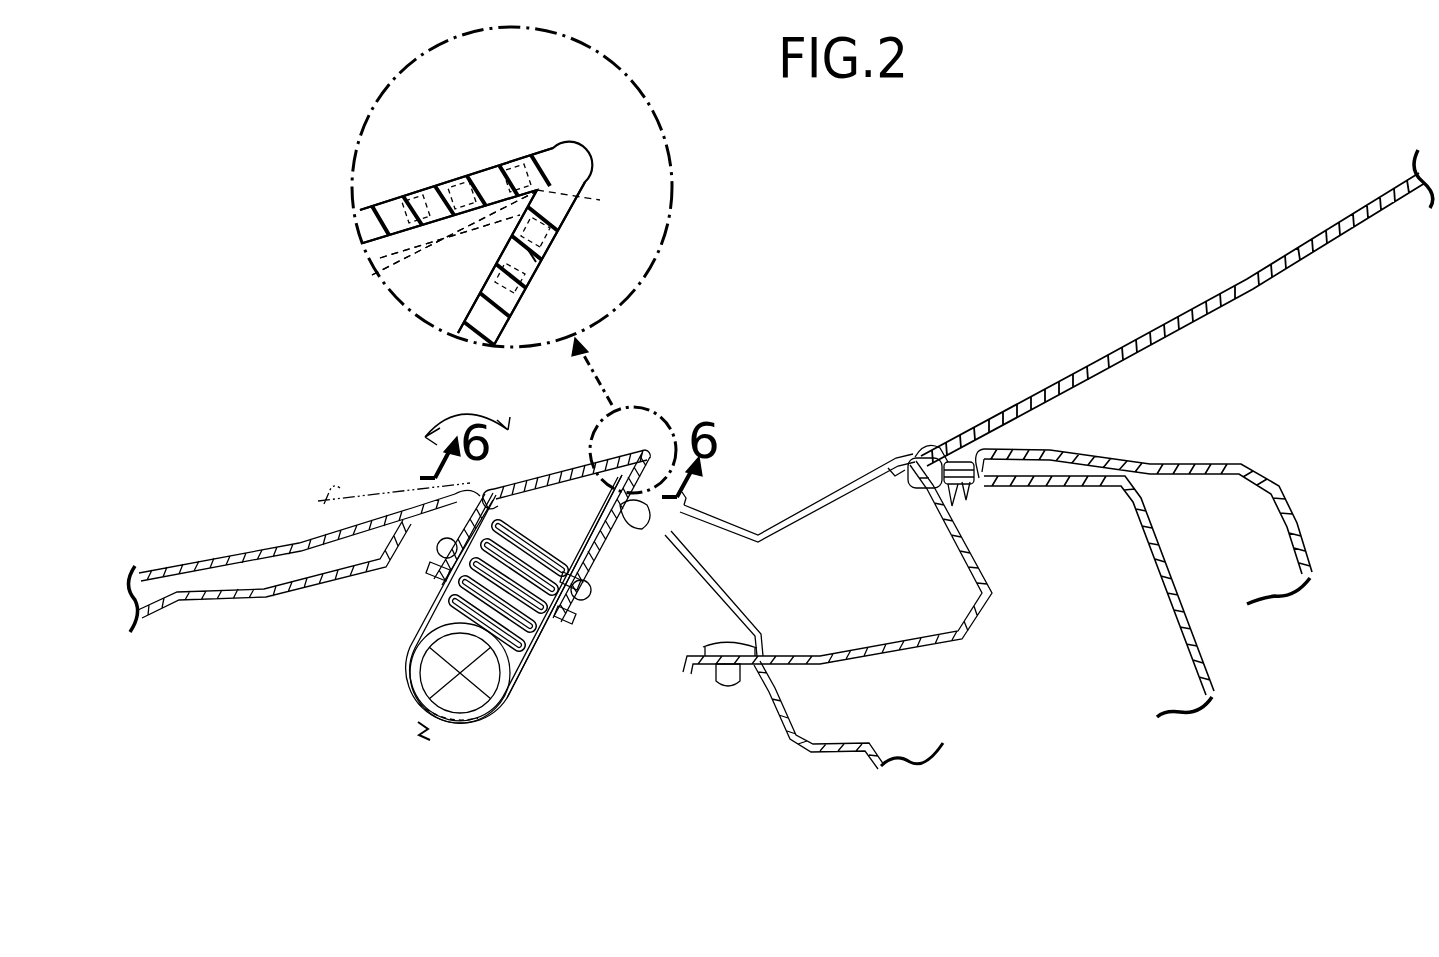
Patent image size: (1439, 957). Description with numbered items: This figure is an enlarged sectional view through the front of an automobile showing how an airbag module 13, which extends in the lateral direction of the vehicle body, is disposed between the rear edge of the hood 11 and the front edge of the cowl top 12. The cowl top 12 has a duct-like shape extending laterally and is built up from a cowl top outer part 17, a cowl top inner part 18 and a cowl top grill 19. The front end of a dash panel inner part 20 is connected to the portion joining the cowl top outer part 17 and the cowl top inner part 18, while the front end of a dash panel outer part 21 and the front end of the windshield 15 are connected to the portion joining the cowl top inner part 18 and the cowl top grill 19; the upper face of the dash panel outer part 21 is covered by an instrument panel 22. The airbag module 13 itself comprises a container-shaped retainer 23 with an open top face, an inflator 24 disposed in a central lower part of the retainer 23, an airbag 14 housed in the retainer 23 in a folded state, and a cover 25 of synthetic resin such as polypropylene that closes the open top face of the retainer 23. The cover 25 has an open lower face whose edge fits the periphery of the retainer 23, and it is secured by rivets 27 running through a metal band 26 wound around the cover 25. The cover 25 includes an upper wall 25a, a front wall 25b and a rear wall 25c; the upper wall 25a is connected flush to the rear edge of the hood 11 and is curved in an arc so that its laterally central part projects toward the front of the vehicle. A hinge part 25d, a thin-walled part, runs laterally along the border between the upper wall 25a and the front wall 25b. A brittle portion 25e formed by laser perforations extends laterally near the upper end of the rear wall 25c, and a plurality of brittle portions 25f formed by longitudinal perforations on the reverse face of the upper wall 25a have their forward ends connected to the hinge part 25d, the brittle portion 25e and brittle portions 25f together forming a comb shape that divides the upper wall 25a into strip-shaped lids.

The hood 11 is at (226, 548).
The cowl top 12 is at (803, 512).
The airbag module 13 is at (578, 636).
The airbag 14 is at (522, 536).
The windshield 15 is at (1246, 274).
The cowl top outer part 17 is at (725, 592).
The cowl top inner part 18 is at (878, 643).
The cowl top grill 19 is at (840, 482).
The dash panel inner part 20 is at (838, 752).
The dash panel outer part 21 is at (1165, 597).
The instrument panel 22 is at (1262, 470).
The retainer 23 is at (530, 657).
The inflator 24 is at (458, 700).
The cover 25 is at (473, 166).
The upper wall 25a is at (433, 186).
The front wall 25b is at (462, 495).
The rear wall 25c is at (525, 297).
The hinge part 25d is at (511, 489).
The brittle portion 25e is at (528, 250).
The brittle portions 25f is at (590, 210).
The metal band 26 is at (604, 567).
The rivets 27 is at (440, 556).